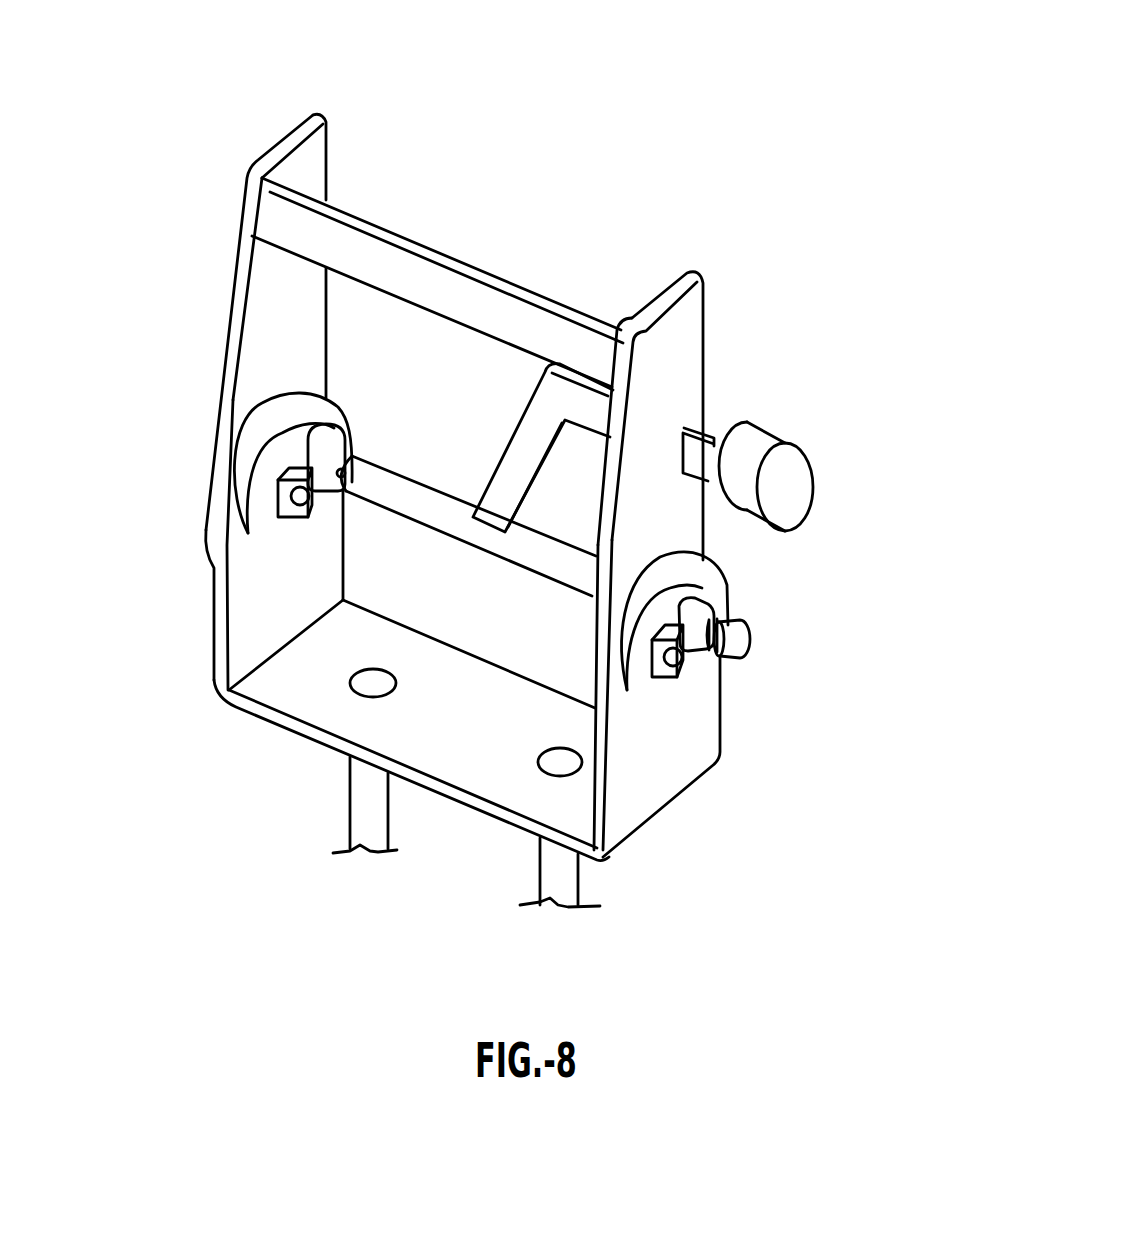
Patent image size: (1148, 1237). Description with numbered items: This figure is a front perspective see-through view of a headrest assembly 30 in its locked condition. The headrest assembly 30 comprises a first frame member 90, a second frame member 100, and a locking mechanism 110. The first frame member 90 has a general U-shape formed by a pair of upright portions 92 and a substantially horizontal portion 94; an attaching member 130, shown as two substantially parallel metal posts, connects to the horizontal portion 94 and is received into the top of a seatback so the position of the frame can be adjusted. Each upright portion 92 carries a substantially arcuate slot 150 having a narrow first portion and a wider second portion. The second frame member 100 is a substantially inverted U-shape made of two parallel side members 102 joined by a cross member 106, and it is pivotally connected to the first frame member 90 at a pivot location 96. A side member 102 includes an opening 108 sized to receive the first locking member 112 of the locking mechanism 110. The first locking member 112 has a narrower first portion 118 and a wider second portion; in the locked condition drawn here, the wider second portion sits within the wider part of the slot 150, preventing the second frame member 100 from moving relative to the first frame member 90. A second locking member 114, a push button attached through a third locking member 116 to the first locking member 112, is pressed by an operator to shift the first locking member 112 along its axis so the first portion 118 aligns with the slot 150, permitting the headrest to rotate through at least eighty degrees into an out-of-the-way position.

The headrest assembly 30 is at (178, 102).
The first frame member 90 is at (186, 656).
The upright portion 92 is at (240, 588).
The substantially horizontal portion 94 is at (446, 684).
The pivot location 96 is at (322, 514).
The second frame member 100 is at (794, 261).
The side member 102 is at (268, 327).
The cross member 106 is at (492, 302).
The opening 108 is at (333, 412).
The locking mechanism 110 is at (848, 392).
The first locking member 112 is at (760, 632).
The second locking member 114 is at (805, 499).
The third locking member 116 is at (534, 466).
The first portion 118 is at (328, 443).
The attaching member 130 is at (481, 902).
The slot 150 is at (268, 434).